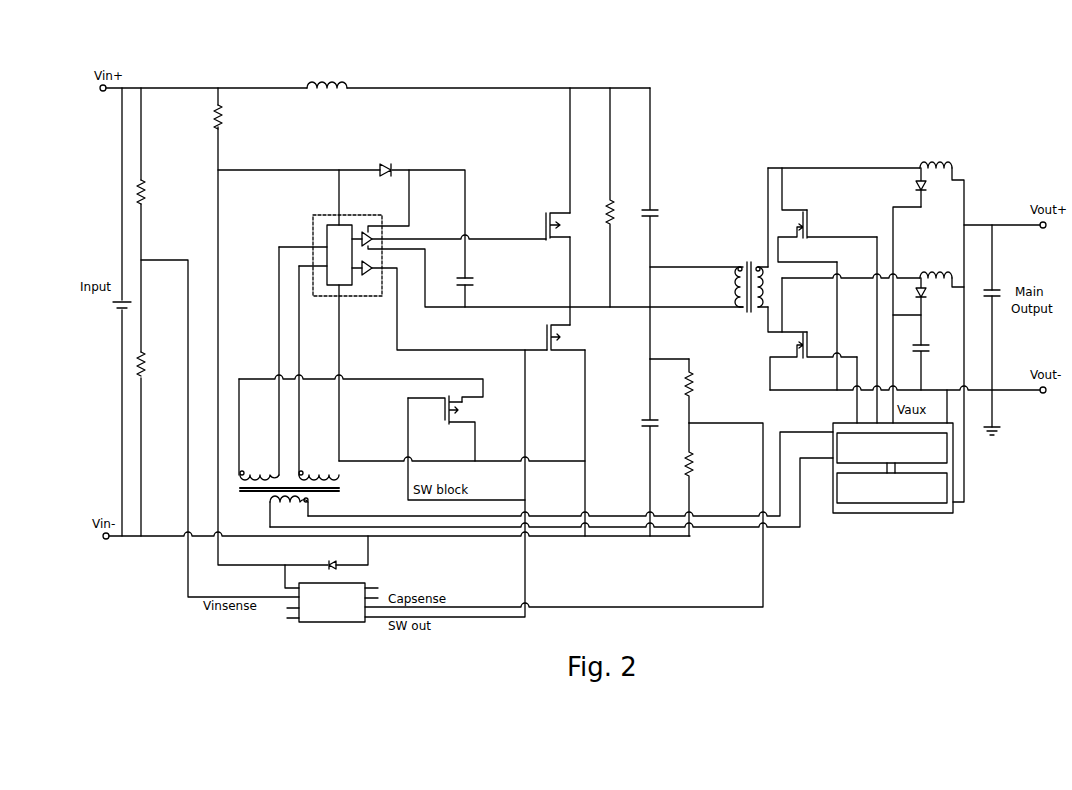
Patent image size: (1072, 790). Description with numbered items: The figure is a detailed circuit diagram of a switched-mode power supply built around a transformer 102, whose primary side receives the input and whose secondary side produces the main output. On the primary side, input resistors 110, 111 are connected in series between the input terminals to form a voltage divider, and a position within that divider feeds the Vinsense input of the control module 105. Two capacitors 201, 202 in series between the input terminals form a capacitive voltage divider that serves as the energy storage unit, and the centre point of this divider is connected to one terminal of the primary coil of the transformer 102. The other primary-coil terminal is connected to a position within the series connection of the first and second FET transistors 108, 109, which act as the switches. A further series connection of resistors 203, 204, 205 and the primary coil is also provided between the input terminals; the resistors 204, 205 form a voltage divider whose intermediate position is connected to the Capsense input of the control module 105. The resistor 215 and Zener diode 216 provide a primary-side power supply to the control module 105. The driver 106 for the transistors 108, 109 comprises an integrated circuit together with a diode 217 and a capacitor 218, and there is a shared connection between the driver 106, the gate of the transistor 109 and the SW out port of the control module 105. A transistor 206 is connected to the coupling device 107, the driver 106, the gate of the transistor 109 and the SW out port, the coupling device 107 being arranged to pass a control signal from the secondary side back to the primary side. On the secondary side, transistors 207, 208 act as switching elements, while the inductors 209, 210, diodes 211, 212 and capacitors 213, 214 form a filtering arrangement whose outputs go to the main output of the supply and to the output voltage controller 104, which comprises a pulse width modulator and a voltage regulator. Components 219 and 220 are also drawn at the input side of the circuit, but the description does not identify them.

The transformer 102 is at (745, 262).
The output voltage controller 104 is at (913, 514).
The control module 105 is at (338, 624).
The driver 106 is at (320, 215).
The coupling device 107 is at (308, 497).
The first FET transistor 108 is at (552, 208).
The second FET transistor 109 is at (547, 335).
The input resistor 110 is at (141, 196).
The input resistor 111 is at (141, 368).
The capacitor 201 is at (656, 210).
The capacitor 202 is at (648, 417).
The resistor 203 is at (610, 208).
The resistor 204 is at (690, 373).
The resistor 205 is at (692, 454).
The transistor 206 is at (457, 428).
The transistor 207 is at (803, 208).
The transistor 208 is at (803, 330).
The inductor 209 is at (930, 159).
The inductor 210 is at (920, 268).
The diode 211 is at (917, 186).
The diode 212 is at (927, 299).
The capacitor 213 is at (994, 299).
The capacitor 214 is at (927, 357).
The resistor 215 is at (216, 125).
The Zener diode 216 is at (330, 557).
The diode 217 is at (388, 162).
The capacitor 218 is at (468, 278).
The input inductor 219 is at (332, 94).
The input voltage source 220 is at (123, 307).